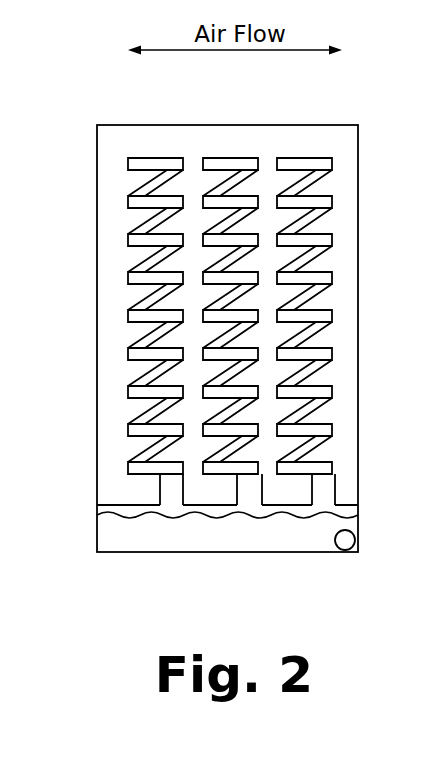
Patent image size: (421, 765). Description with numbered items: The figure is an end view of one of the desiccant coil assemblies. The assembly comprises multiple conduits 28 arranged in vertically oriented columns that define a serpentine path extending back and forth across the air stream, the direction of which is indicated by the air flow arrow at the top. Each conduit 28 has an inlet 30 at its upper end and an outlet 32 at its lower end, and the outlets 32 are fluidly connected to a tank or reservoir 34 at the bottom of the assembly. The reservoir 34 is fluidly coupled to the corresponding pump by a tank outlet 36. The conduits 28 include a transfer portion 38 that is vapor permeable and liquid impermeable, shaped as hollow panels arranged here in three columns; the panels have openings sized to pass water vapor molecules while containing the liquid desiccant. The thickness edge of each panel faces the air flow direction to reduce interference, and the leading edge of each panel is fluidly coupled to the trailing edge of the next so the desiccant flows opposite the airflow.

The conduits 28 is at (307, 158).
The inlet 30 is at (318, 171).
The outlet 32 is at (320, 495).
The tank or reservoir 34 is at (120, 528).
The tank outlet 36 is at (348, 544).
The transfer portion 38 is at (128, 316).